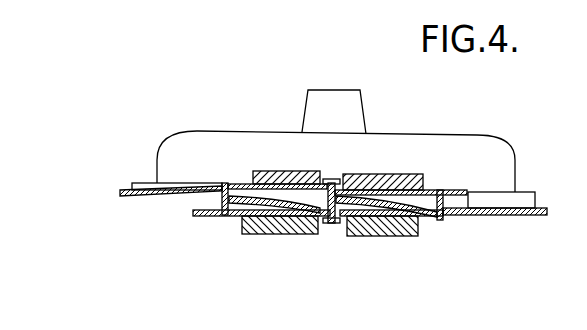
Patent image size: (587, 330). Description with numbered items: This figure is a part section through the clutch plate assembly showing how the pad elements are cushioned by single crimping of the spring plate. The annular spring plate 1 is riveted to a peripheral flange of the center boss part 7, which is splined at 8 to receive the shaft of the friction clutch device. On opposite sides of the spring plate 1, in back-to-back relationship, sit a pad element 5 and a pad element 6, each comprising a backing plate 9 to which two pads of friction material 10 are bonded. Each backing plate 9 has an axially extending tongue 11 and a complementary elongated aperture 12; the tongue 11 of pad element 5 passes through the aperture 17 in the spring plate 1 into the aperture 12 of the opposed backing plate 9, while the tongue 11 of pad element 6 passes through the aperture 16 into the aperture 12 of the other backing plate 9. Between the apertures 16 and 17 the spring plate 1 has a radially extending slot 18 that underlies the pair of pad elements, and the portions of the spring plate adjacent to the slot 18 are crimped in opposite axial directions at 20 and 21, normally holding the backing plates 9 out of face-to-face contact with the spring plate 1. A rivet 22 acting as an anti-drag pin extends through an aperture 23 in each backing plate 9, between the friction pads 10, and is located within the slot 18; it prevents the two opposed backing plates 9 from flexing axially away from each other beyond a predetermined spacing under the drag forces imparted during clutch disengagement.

The spring plate 1 is at (125, 193).
The pad element 5 is at (444, 226).
The pad element 6 is at (243, 170).
The center boss part 7 is at (258, 130).
The splines 8 is at (312, 88).
The backing plate 9 is at (230, 181).
The pad of friction material 10 is at (413, 176).
The tongue 11 is at (205, 207).
The elongated aperture 12 is at (438, 192).
The radially extending aperture 16 is at (217, 185).
The radially extending aperture 17 is at (447, 207).
The radially extending slot 18 is at (355, 178).
The deformed portion 20 is at (280, 234).
The deformed portion 21 is at (360, 237).
The rivet 22 is at (334, 224).
The aperture 23 is at (317, 183).